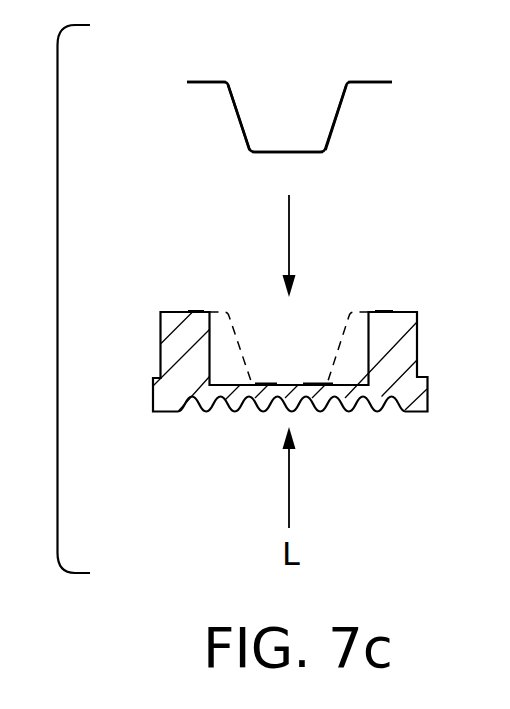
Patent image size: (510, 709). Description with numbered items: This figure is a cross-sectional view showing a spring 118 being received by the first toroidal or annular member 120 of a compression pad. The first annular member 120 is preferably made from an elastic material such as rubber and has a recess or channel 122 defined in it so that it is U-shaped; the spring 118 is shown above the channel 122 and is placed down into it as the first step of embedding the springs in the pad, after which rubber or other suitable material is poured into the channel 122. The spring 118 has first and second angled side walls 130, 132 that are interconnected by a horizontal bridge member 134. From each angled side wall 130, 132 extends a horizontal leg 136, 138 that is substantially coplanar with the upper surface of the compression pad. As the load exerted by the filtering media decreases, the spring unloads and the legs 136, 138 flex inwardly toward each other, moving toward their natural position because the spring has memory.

The spring 118 is at (337, 125).
The first toroidal annular member 120 is at (170, 322).
The channel 122 is at (230, 370).
The first angled side wall 130 is at (237, 120).
The second angled side wall 132 is at (337, 110).
The horizontal bridge member 134 is at (297, 153).
The horizontal leg 136 is at (208, 82).
The horizontal leg 138 is at (367, 80).